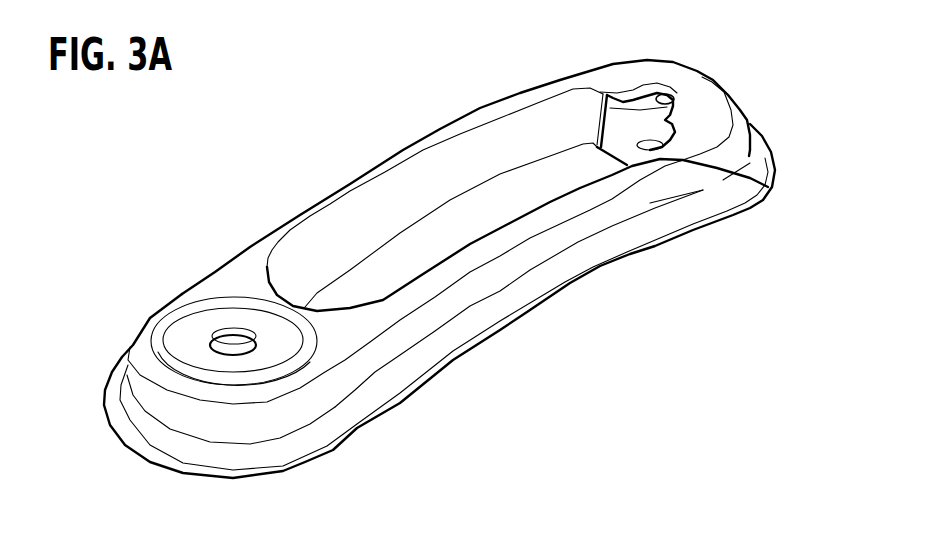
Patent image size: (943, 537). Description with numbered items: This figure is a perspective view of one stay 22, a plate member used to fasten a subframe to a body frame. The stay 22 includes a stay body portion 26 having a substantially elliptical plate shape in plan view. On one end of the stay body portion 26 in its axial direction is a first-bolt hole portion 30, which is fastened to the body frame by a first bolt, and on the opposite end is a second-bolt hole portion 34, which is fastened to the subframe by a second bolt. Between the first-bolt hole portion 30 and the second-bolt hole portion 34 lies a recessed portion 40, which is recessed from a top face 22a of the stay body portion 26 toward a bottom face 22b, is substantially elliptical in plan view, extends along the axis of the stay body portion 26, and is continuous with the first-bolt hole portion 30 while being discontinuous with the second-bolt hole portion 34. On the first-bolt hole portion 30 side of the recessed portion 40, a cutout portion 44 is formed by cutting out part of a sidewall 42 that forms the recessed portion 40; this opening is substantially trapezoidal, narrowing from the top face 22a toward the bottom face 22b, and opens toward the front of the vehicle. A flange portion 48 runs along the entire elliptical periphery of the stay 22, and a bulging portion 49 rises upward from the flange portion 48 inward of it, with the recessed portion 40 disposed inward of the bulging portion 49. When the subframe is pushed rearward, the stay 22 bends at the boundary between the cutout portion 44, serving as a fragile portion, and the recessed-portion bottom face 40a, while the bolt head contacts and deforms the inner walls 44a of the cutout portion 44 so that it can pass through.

The stay 22 is at (318, 128).
The top face 22a is at (337, 333).
The bottom face 22b is at (370, 427).
The stay body portion 26 is at (531, 258).
The first-bolt hole portion 30 is at (673, 103).
The second-bolt hole portion 34 is at (223, 344).
The recessed portion 40 is at (437, 173).
The recessed-portion bottom face 40a is at (557, 180).
The sidewall 42 is at (592, 100).
The cutout portion 44 is at (630, 150).
The inner walls 44a is at (596, 125).
The flange portion 48 is at (462, 328).
The bulging portion 49 is at (327, 392).